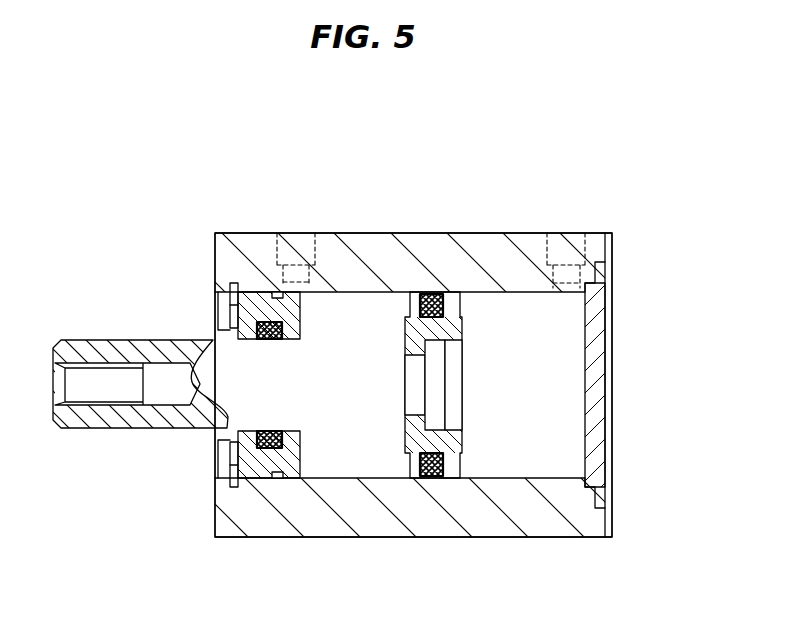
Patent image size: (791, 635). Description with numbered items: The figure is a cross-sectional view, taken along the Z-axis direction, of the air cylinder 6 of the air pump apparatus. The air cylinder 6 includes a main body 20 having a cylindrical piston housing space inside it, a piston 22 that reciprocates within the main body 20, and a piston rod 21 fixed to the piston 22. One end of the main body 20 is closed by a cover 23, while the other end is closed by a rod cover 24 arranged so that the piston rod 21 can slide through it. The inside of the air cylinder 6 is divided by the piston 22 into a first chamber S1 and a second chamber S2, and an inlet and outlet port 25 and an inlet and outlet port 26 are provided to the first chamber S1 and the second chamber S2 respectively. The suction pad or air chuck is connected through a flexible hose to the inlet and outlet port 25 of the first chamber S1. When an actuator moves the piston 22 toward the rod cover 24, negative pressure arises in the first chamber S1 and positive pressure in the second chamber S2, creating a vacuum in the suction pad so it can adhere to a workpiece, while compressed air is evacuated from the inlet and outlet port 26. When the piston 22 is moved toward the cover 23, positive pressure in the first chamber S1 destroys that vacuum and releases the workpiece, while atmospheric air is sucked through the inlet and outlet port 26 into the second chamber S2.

The air cylinder 6 is at (386, 226).
The main body 20 is at (427, 260).
The piston rod 21 is at (333, 363).
The piston 22 is at (462, 310).
The cover 23 is at (605, 339).
The rod cover 24 is at (247, 290).
The inlet and outlet port 25 is at (574, 253).
The inlet and outlet port 26 is at (300, 298).
The first chamber S1 is at (528, 458).
The second chamber S2 is at (355, 458).